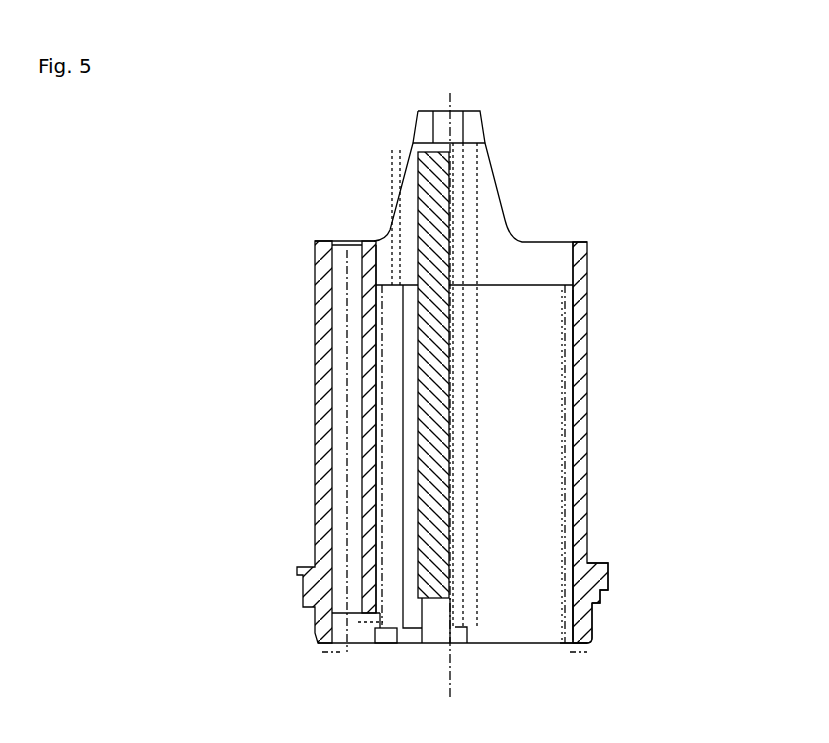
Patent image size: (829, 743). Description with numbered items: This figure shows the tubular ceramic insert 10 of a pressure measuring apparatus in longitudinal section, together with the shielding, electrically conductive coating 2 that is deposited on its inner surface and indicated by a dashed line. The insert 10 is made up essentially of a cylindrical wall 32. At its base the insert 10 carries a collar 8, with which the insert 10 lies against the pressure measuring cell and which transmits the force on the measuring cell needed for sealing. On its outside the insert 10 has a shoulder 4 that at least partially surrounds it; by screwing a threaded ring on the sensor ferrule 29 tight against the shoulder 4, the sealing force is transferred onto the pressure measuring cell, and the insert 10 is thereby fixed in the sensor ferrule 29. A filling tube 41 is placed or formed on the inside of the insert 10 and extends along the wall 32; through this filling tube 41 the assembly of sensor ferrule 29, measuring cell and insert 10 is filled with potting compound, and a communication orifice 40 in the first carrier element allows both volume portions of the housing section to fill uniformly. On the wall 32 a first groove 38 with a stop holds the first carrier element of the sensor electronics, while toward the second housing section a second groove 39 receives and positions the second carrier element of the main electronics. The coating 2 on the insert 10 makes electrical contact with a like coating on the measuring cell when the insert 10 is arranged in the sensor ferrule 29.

The insert 10 is at (626, 179).
The second groove 39 is at (464, 127).
The first groove 38 is at (410, 192).
The wall 32 is at (585, 331).
The electrically conductive coating 2 is at (368, 391).
The filling tube 41 is at (333, 460).
The shoulder 4 is at (609, 582).
The collar 8 is at (593, 629).
The sensor ferrule 29 is at (420, 598).
The communication orifice 40 is at (437, 644).